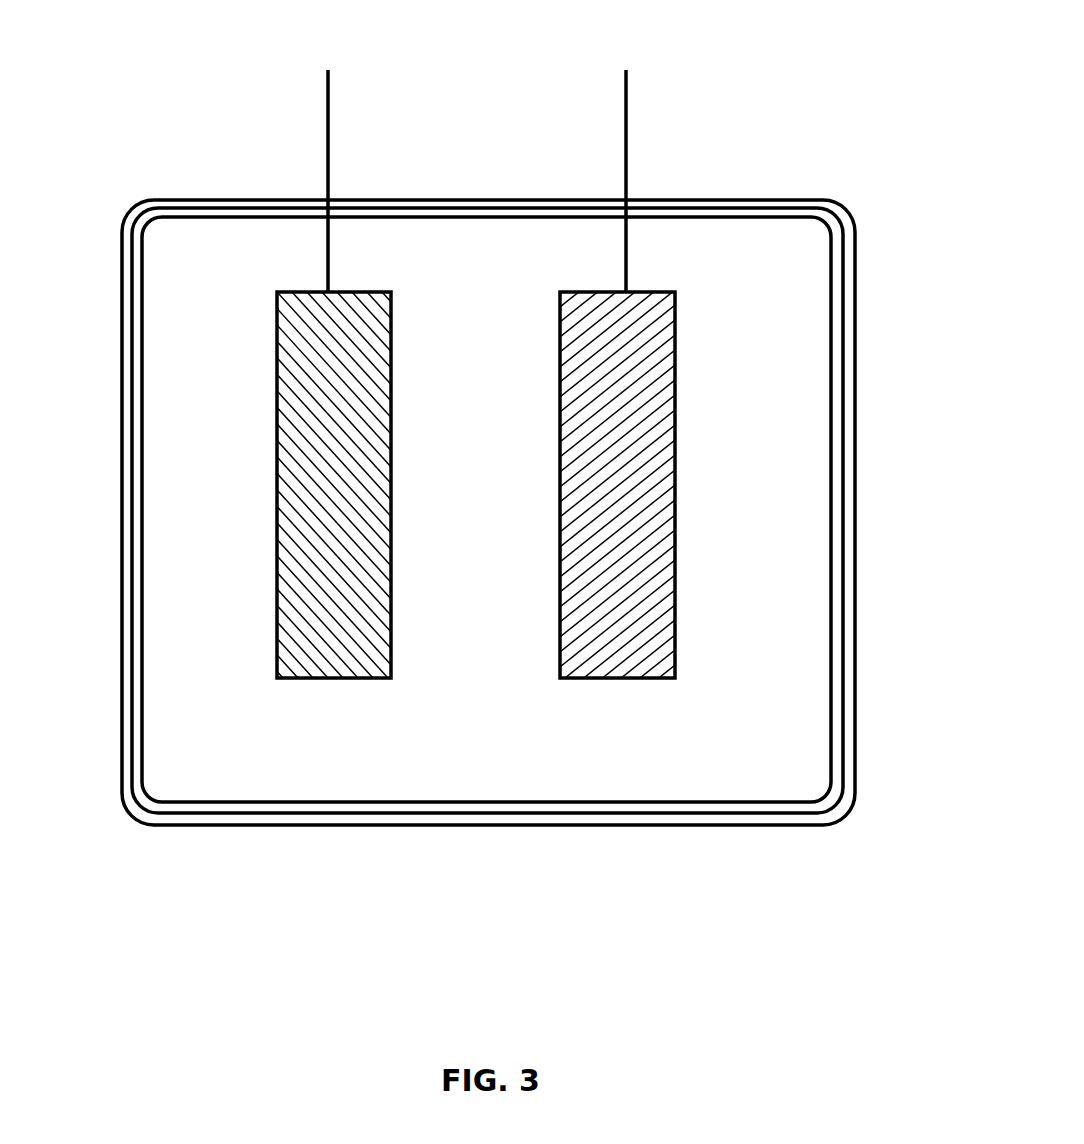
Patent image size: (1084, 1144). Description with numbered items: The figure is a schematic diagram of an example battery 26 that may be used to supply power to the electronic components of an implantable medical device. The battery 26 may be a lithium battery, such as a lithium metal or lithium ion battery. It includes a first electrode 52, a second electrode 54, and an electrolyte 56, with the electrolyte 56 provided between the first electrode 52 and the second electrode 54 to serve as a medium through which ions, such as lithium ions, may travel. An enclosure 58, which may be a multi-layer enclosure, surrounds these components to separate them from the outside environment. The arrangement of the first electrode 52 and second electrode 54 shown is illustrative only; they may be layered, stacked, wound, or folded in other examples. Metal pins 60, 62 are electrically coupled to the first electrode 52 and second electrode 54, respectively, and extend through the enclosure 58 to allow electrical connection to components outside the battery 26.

The battery 26 is at (853, 72).
The first electrode 52 is at (295, 393).
The second electrode 54 is at (663, 393).
The electrolyte 56 is at (492, 741).
The enclosure 58 is at (121, 280).
The metal pin 60 is at (326, 163).
The metal pin 62 is at (624, 165).